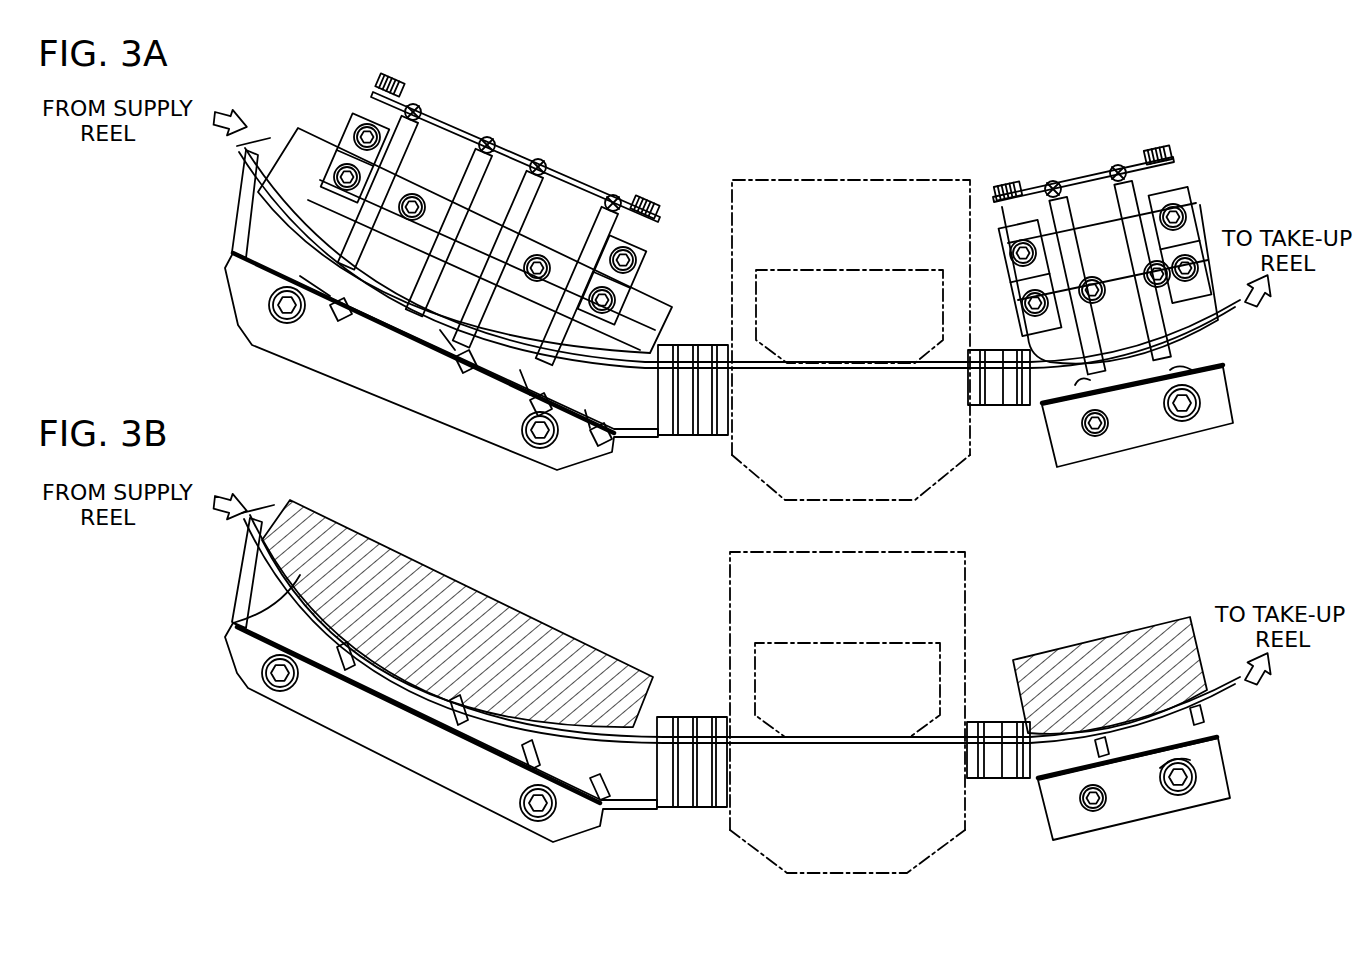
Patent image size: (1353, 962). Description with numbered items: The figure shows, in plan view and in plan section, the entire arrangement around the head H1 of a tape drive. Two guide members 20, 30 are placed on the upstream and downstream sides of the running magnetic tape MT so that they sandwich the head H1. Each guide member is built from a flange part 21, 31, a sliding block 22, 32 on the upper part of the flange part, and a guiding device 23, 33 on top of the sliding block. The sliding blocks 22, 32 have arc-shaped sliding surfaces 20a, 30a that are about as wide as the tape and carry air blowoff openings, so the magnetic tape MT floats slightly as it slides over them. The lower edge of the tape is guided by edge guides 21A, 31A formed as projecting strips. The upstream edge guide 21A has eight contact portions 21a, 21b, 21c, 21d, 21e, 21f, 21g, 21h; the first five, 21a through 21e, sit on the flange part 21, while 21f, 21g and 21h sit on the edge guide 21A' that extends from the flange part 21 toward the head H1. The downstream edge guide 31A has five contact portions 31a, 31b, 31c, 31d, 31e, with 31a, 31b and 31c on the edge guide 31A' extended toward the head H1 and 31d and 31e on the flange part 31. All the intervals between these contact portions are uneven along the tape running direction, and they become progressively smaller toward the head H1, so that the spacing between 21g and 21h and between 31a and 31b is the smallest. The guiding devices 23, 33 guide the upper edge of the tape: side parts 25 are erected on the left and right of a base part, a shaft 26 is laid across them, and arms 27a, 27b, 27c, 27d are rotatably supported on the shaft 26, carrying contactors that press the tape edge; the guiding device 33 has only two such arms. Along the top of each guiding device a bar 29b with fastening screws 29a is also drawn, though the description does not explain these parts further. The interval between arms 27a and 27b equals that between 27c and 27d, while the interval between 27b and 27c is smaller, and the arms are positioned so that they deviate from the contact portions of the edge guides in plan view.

In FIG. 3A, the guide member 20 is at (492, 97).
In FIG. 3B, the guide member 20 is at (522, 578).
In FIG. 3A, the sliding surface 20a is at (262, 236).
In FIG. 3B, the sliding surface 20a is at (248, 645).
In FIG. 3A, the flange part 21 is at (245, 300).
In FIG. 3B, the flange part 21 is at (245, 690).
In FIG. 3B, the contact portion 21a is at (248, 600).
In FIG. 3B, the contact portion 21b is at (345, 680).
In FIG. 3B, the contact portion 21c is at (455, 730).
In FIG. 3B, the contact portion 21d is at (520, 780).
In FIG. 3B, the contact portion 21e is at (598, 806).
In FIG. 3B, the contact portion 21f is at (663, 820).
In FIG. 3B, the contact portion 21g is at (698, 810).
In FIG. 3B, the contact portion 21h is at (720, 820).
In FIG. 3B, the edge guide 21A is at (418, 715).
In FIG. 3B, the edge guide 21A' is at (692, 722).
In FIG. 3A, the sliding block 22 is at (300, 160).
In FIG. 3B, the sliding block 22 is at (395, 565).
In FIG. 3A, the guiding device 23 is at (612, 140).
In FIG. 3A, the side part 25 is at (345, 135).
In FIG. 3A, the shaft 26 is at (430, 165).
In FIG. 3A, the arm 27a is at (330, 330).
In FIG. 3A, the arm 27b is at (445, 345).
In FIG. 3A, the arm 27c is at (525, 385).
In FIG. 3A, the arm 27d is at (585, 420).
In FIG. 3A, the fixing screw 29a is at (418, 104).
In FIG. 3A, the rail bar 29b is at (600, 190).
In FIG. 3A, the guide member 30 is at (1086, 100).
In FIG. 3B, the guide member 30 is at (1088, 600).
In FIG. 3A, the sliding surface 30a is at (1210, 385).
In FIG. 3B, the sliding surface 30a is at (1210, 757).
In FIG. 3A, the flange part 31 is at (1210, 415).
In FIG. 3B, the flange part 31 is at (1218, 790).
In FIG. 3B, the contact portion 31a is at (975, 778).
In FIG. 3B, the contact portion 31b is at (990, 778).
In FIG. 3B, the contact portion 31c is at (1028, 778).
In FIG. 3B, the contact portion 31d is at (1105, 765).
In FIG. 3B, the contact portion 31e is at (1205, 720).
In FIG. 3B, the edge guide 31A is at (1132, 795).
In FIG. 3B, the edge guide 31A' is at (998, 699).
In FIG. 3A, the sliding block 32 is at (1040, 340).
In FIG. 3B, the sliding block 32 is at (1155, 630).
In FIG. 3A, the guiding device 33 is at (1020, 125).
In FIG. 3A, the head H1 is at (852, 268).
In FIG. 3B, the head H1 is at (908, 643).
In FIG. 3A, the magnetic tape MT is at (246, 175).
In FIG. 3B, the magnetic tape MT is at (246, 545).